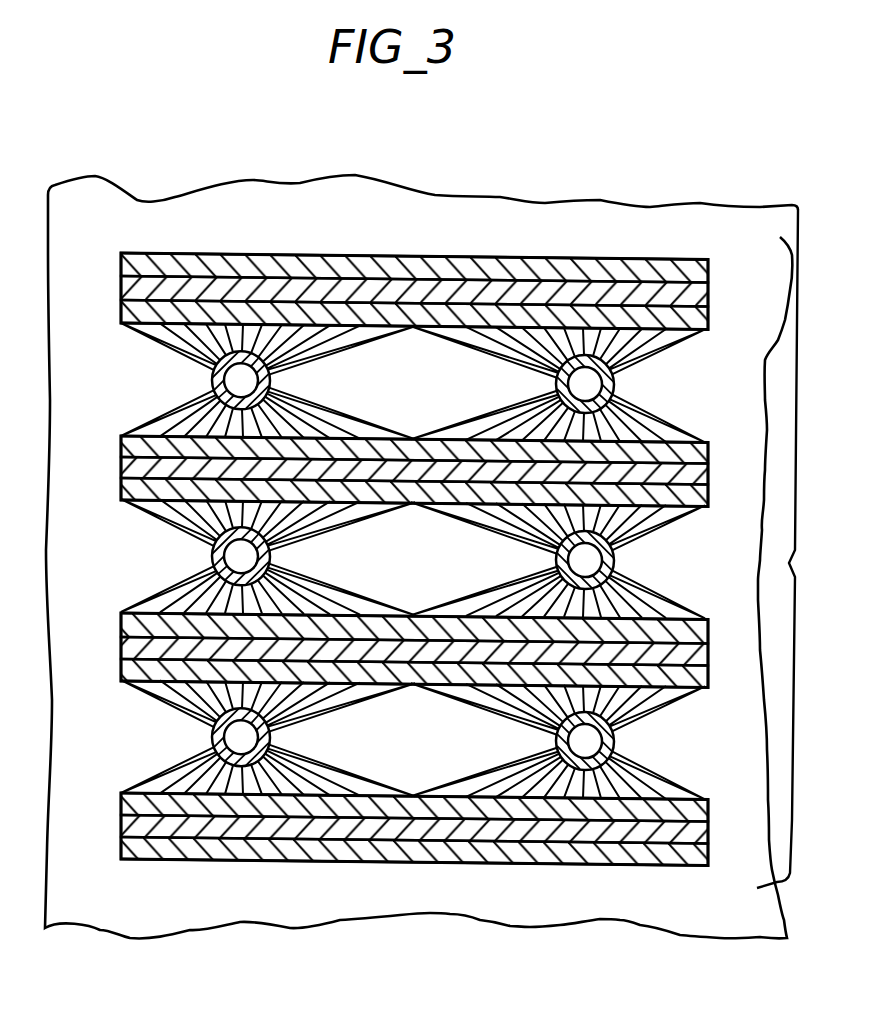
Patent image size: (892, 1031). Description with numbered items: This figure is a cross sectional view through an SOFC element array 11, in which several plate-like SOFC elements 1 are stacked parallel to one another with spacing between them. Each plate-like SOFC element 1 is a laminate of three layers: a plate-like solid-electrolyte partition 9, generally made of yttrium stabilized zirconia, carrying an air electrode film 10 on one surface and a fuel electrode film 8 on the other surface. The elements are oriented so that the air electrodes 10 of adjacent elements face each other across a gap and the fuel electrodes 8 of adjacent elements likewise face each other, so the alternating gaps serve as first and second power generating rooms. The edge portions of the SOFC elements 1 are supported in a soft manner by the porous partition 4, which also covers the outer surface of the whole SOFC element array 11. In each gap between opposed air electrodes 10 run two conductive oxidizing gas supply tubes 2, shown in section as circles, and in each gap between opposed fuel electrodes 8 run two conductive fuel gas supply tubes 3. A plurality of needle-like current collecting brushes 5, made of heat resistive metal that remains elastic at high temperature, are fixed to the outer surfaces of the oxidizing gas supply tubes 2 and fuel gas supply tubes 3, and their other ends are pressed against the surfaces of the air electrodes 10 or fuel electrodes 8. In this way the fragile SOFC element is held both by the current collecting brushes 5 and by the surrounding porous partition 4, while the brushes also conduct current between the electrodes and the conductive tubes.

The plate-like SOFC element 1 is at (446, 559).
The conductive oxidizing gas supply tube 2 is at (211, 379).
The conductive fuel gas supply tube 3 is at (211, 555).
The porous partition 4 is at (432, 205).
The needle-like current collecting brush 5 is at (323, 407).
The fuel electrode film 8 is at (121, 264).
The plate-like solid-electrolyte partition 9 is at (121, 288).
The air electrode film 10 is at (121, 311).
The SOFC element array 11 is at (794, 549).